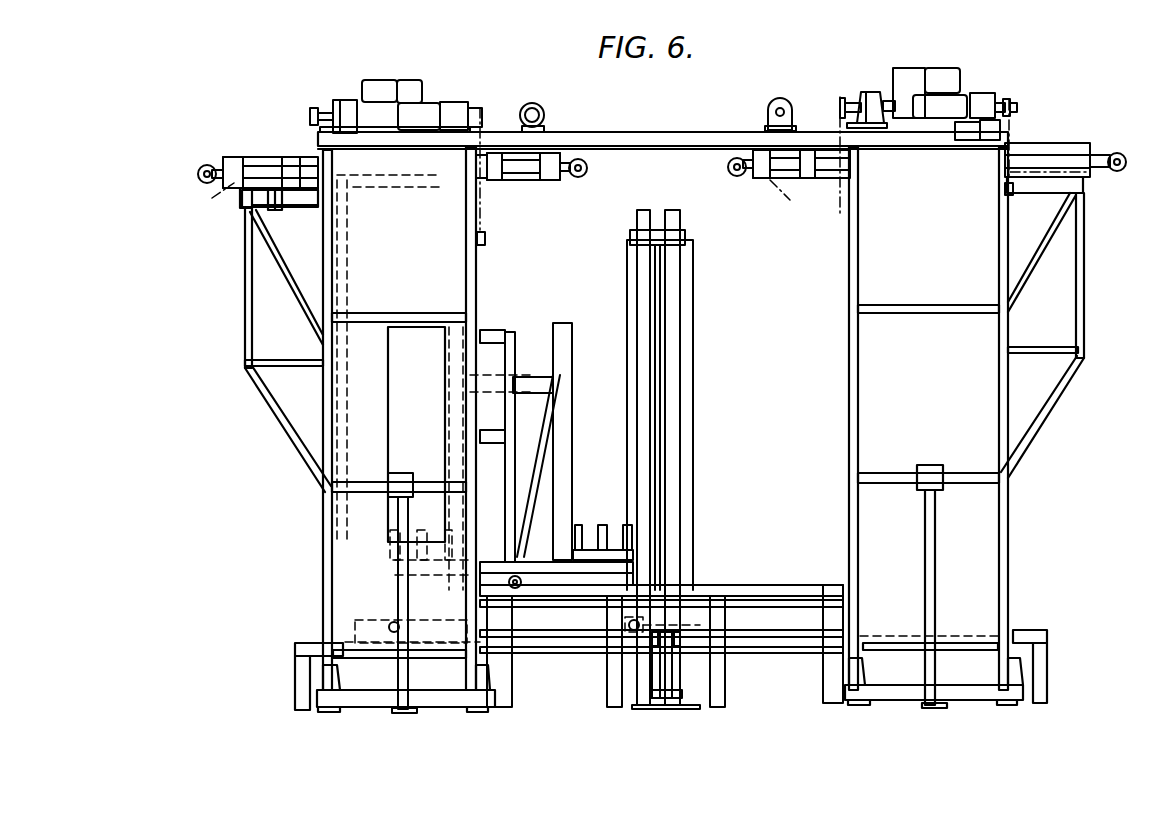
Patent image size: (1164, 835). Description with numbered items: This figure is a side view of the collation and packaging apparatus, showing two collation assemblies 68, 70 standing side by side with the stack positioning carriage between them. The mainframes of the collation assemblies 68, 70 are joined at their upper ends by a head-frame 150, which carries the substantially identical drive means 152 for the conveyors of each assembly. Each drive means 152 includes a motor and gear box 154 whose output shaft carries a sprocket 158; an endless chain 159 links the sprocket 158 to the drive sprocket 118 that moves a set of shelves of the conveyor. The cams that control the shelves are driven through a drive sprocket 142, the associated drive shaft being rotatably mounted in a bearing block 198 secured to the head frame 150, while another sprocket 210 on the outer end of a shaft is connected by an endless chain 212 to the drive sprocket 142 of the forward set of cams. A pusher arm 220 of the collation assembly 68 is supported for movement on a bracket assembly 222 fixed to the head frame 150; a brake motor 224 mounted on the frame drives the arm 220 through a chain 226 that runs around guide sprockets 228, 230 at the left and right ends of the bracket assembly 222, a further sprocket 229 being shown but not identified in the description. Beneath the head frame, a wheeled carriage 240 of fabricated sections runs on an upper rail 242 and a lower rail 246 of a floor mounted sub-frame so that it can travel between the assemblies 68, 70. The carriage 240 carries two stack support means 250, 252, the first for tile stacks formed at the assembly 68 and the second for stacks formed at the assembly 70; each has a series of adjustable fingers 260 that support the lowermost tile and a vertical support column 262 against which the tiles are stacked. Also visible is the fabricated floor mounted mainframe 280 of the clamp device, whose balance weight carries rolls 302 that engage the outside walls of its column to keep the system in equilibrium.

The collation assembly 68 is at (266, 462).
The collation assembly 70 is at (802, 404).
The drive sprocket 118 is at (1004, 190).
The drive sprocket 142 is at (486, 240).
The head-frame 150 is at (651, 132).
The drive means 152 is at (870, 68).
The motor and gear box 154 is at (332, 78).
The sprocket 158 is at (312, 110).
The endless chain 159 is at (1012, 127).
The bearing block 198 is at (866, 92).
The sprocket 210 is at (481, 108).
The endless chain 212 is at (482, 200).
The pusher arm 220 is at (246, 112).
The bracket assembly 222 is at (260, 157).
The brake motor 224 is at (533, 103).
The chain 226 is at (200, 203).
The guide sprocket 228 is at (579, 178).
The roller 229 is at (728, 166).
The guide sprocket 230 is at (203, 166).
The wheeled carriage 240 is at (567, 316).
The upper rail 242 is at (525, 603).
The lower rail 246 is at (573, 654).
The stack support means 250 is at (365, 512).
The stack support means 252 is at (642, 491).
The adjustable fingers 260 is at (627, 524).
The vertical support column 262 is at (477, 326).
The mainframe 280 is at (646, 200).
The rolls 302 is at (660, 700).